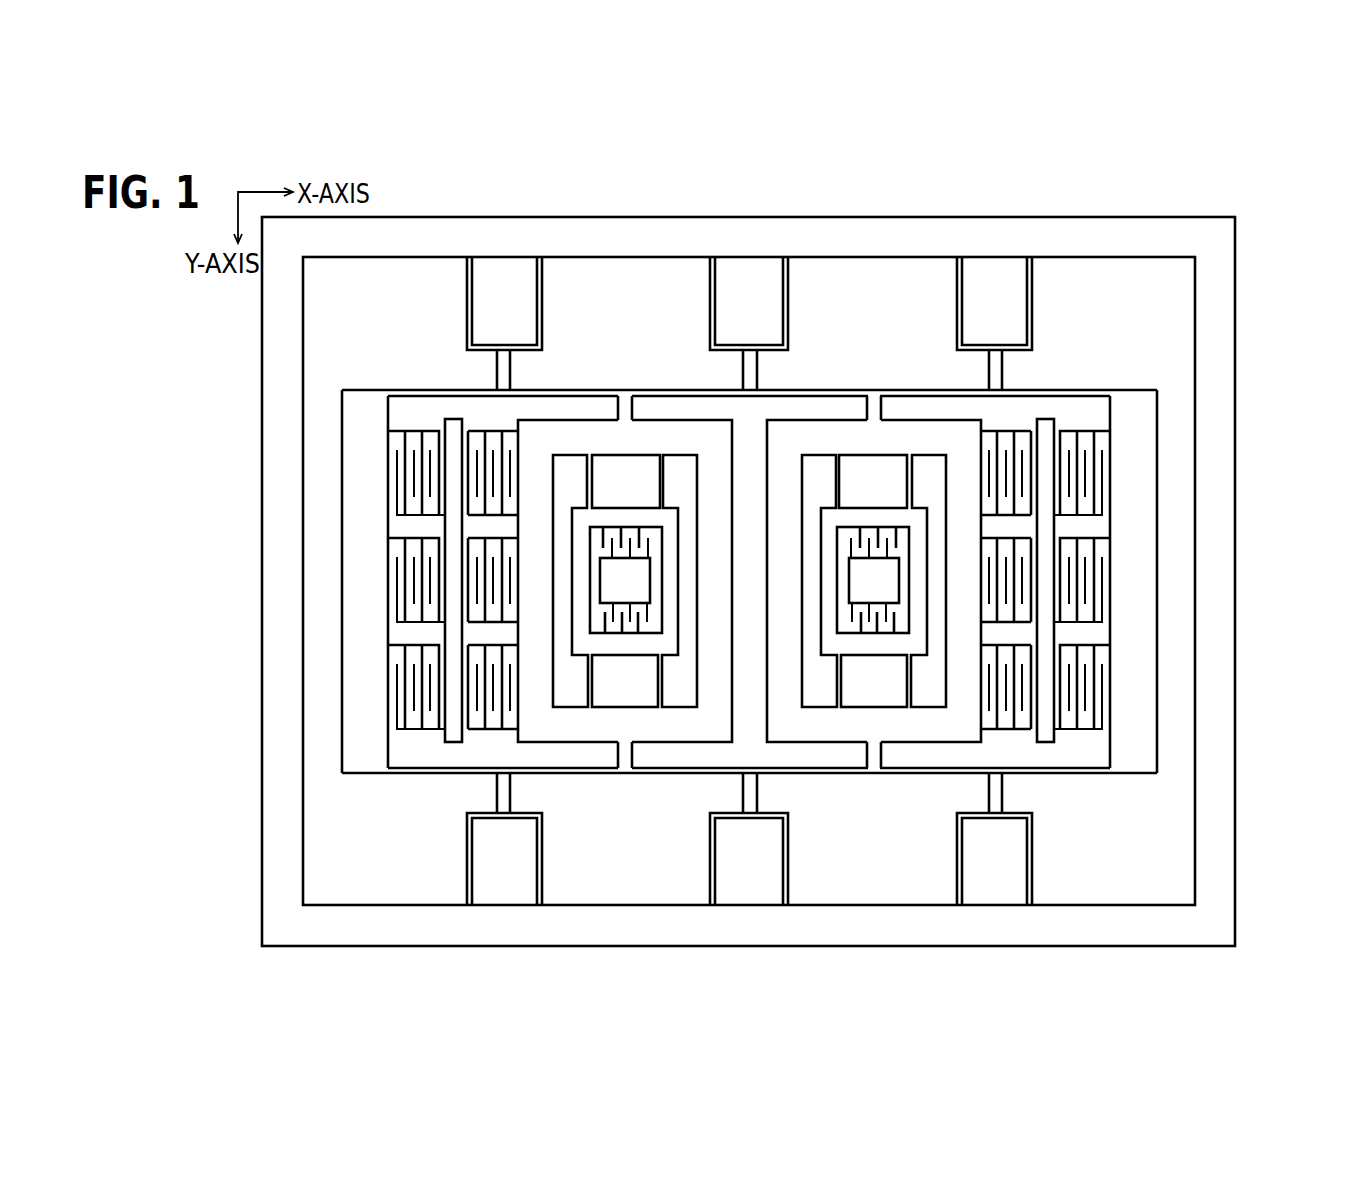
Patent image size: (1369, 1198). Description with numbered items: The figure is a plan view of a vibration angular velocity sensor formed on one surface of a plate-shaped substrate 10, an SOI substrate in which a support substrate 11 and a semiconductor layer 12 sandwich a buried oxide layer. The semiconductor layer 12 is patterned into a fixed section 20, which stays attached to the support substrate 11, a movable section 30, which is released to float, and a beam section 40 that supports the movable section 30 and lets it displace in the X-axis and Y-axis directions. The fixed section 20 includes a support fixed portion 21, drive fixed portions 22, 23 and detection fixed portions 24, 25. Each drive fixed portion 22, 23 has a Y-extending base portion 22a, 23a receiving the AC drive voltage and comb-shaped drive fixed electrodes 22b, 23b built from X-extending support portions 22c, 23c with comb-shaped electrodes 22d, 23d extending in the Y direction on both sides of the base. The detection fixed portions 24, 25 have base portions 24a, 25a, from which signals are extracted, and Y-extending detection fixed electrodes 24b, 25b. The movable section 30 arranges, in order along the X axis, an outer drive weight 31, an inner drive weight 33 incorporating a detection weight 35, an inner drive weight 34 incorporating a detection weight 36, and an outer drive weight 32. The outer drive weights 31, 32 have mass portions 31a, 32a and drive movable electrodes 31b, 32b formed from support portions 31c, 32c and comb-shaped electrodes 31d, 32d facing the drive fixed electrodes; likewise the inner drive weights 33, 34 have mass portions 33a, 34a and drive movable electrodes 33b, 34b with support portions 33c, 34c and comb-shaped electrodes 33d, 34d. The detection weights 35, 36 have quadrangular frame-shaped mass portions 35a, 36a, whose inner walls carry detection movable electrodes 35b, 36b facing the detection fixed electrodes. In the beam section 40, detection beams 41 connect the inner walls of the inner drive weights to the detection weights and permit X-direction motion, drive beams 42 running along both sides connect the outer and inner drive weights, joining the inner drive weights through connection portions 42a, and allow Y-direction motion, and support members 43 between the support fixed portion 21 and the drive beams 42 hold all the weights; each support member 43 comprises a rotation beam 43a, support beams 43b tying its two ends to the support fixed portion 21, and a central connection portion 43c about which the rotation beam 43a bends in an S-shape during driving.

The substrate 10 is at (1293, 250).
The support substrate 11 is at (1163, 298).
The semiconductor layer 12 is at (1218, 260).
The fixed section 20 is at (1059, 229).
The support fixed portion 21 is at (1213, 528).
The drive fixed portion 22 is at (436, 756).
The base portion 22a is at (412, 518).
The drive fixed electrode 22b is at (397, 500).
The support portion 22c is at (453, 528).
The comb-shaped electrode 22d is at (382, 509).
The drive fixed portion 23 is at (1068, 760).
The base portion 23a is at (1063, 756).
The drive fixed electrode 23b is at (1110, 657).
The support portion 23c is at (1110, 633).
The comb-shaped electrode 23d is at (1116, 677).
The detection fixed portion 24 is at (722, 640).
The base portion 24a is at (663, 570).
The detection fixed electrode 24b is at (645, 580).
The detection fixed portion 25 is at (778, 640).
The base portion 25a is at (836, 570).
The detection fixed electrode 25b is at (854, 580).
The movable section 30 is at (1169, 594).
The outer drive weight 31 is at (345, 384).
The mass portion 31a is at (353, 394).
The drive movable electrode 31b is at (398, 421).
The support portion 31c is at (396, 452).
The comb-shaped electrode 31d is at (403, 445).
The outer drive weight 32 is at (1132, 375).
The mass portion 32a is at (1147, 390).
The drive movable electrode 32b is at (1103, 510).
The support portion 32c is at (1106, 520).
The comb-shaped electrode 32d is at (1113, 467).
The inner drive weight 33 is at (564, 752).
The mass portion 33a is at (533, 730).
The drive movable electrode 33b is at (482, 744).
The support portion 33c is at (493, 735).
The comb-shaped electrode 33d is at (510, 722).
The inner drive weight 34 is at (943, 752).
The mass portion 34a is at (966, 730).
The drive movable electrode 34b is at (1025, 744).
The support portion 34c is at (1006, 735).
The comb-shaped electrode 34d is at (989, 722).
The detection weight 35 is at (616, 665).
The mass portion 35a is at (613, 623).
The detection movable electrode 35b is at (637, 620).
The detection weight 36 is at (891, 665).
The mass portion 36a is at (886, 623).
The detection movable electrode 36b is at (862, 620).
The beam section 40 is at (814, 379).
The detection beam 41 is at (665, 462).
The drive beam 42 is at (427, 390).
The connection portion 42a is at (637, 398).
The support member 43 is at (455, 294).
The rotation beam 43a is at (507, 370).
The support beam 43b is at (488, 348).
The connection portion 43c is at (513, 372).